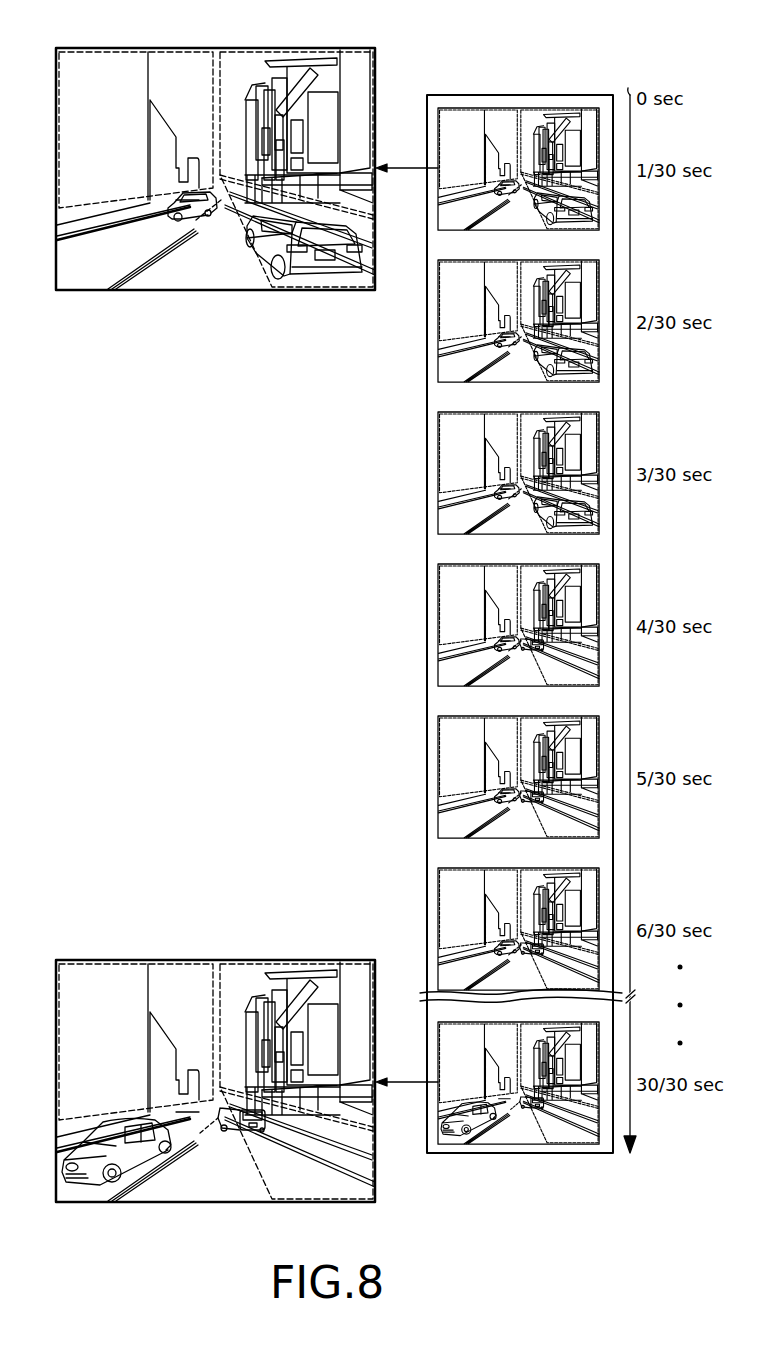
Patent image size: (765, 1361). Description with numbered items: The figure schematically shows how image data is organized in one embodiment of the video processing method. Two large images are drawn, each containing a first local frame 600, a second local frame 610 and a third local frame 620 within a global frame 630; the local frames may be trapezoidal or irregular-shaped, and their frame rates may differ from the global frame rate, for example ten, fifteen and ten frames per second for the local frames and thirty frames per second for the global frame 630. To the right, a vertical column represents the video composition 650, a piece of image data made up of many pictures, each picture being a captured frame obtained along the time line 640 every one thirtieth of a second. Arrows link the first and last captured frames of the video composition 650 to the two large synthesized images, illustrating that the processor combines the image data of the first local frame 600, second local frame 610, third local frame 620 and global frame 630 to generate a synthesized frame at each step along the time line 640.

The first local frame 600 is at (76, 51).
The second local frame 610 is at (352, 291).
The third local frame 620 is at (355, 51).
The global frame 630 is at (141, 291).
The time line 640 is at (630, 96).
The video composition 650 is at (519, 95).